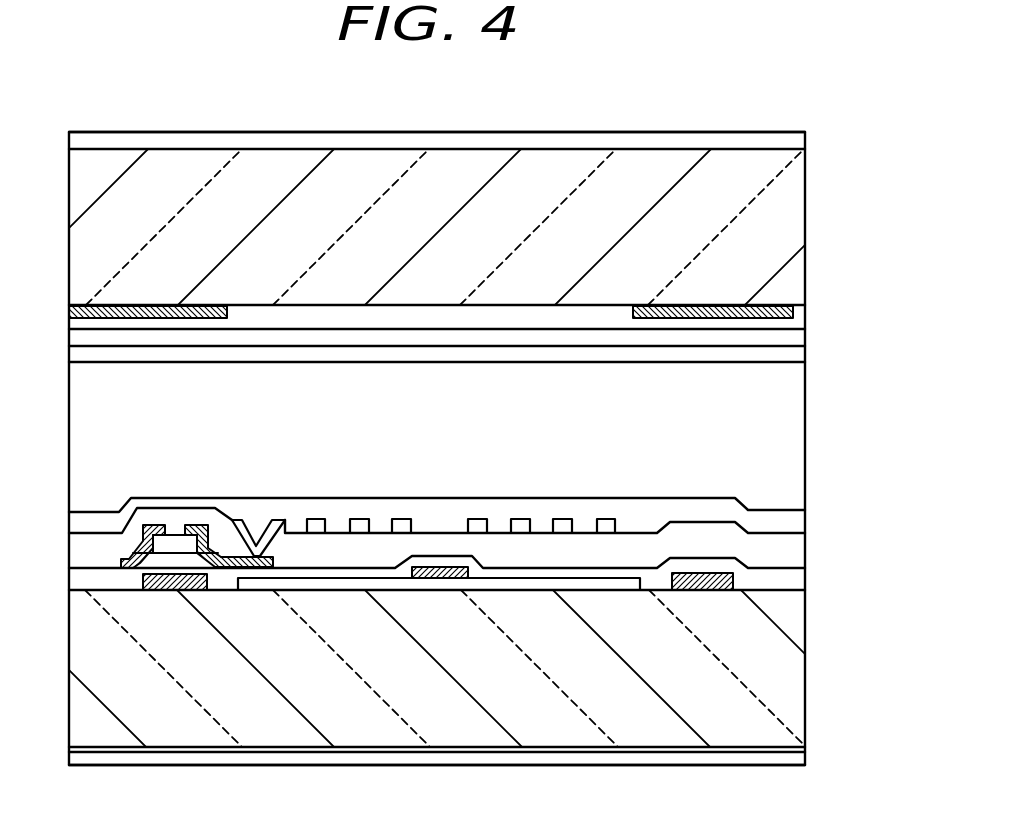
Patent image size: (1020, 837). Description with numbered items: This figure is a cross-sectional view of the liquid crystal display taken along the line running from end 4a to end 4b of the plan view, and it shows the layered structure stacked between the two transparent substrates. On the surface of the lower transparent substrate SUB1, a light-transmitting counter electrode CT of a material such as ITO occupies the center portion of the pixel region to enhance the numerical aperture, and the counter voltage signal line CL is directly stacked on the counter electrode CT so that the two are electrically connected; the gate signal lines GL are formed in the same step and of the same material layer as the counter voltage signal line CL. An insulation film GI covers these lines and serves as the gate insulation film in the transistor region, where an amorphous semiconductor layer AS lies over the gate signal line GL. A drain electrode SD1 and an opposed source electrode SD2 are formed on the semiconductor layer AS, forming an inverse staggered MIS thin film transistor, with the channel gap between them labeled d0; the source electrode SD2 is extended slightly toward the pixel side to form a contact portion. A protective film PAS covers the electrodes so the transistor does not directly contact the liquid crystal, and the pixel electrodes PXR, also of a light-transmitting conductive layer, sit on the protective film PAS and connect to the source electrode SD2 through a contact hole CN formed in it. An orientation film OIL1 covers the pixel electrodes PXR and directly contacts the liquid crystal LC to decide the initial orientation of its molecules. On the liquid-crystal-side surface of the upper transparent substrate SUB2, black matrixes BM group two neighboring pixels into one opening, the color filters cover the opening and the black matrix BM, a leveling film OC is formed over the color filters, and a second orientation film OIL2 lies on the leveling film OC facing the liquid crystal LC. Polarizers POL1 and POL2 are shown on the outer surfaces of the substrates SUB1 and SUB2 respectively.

The upper polarizer POL2 is at (797, 142).
The transparent substrate SUB2 is at (793, 187).
The black matrix BM is at (773, 303).
The leveling film OC is at (790, 339).
The orientation film OIL2 is at (777, 355).
The liquid crystal LC is at (790, 427).
The section line end 4a is at (38, 452).
The section line end 4b is at (887, 450).
The orientation film OIL1 is at (795, 520).
The protective film PAS is at (790, 552).
The contact hole CN is at (261, 510).
The pixel electrode PXR is at (401, 519).
The insulation film GI is at (788, 580).
The drain electrode SD1 is at (147, 542).
The amorphous semiconductor layer AS is at (170, 553).
The channel length d0 is at (194, 539).
The source electrode SD2 is at (203, 528).
The gate signal line GL is at (707, 590).
The counter electrode CT is at (298, 583).
The counter voltage signal line CL is at (438, 578).
The transparent substrate SUB1 is at (787, 695).
The lower polarizer POL1 is at (793, 757).